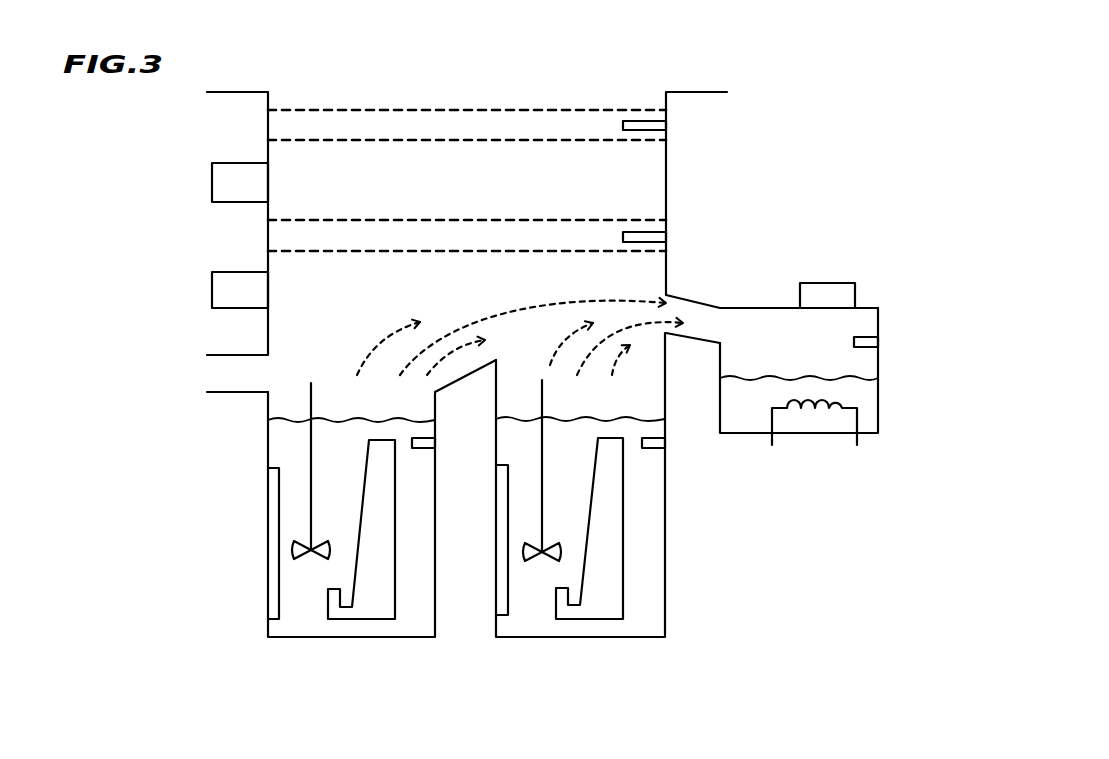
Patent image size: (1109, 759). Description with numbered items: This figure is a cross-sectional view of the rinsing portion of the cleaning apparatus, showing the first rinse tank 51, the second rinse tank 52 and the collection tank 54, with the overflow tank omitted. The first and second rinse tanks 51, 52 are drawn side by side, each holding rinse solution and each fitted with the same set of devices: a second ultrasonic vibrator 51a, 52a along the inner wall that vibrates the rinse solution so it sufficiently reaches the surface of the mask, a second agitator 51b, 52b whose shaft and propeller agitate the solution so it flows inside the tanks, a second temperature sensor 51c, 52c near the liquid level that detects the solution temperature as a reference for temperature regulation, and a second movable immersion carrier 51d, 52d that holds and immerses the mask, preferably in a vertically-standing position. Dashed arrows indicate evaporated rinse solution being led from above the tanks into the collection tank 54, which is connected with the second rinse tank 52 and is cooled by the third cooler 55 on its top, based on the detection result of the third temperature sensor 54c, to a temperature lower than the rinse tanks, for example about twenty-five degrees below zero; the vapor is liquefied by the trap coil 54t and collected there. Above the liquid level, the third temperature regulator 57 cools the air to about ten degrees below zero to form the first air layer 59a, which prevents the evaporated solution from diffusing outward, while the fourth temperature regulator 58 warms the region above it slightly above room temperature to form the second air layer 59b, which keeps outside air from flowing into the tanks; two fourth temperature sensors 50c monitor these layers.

The fourth temperature sensor 50c is at (668, 124).
The first rinse tank 51 is at (420, 628).
The second ultrasonic vibrator 51a is at (276, 553).
The second agitator 51b is at (311, 497).
The second temperature sensor 51c is at (447, 425).
The second movable immersion carrier 51d is at (367, 608).
The second rinse tank 52 is at (648, 628).
The second ultrasonic vibrator 52a is at (506, 555).
The second agitator 52b is at (542, 497).
The second temperature sensor 52c is at (667, 444).
The second movable immersion carrier 52d is at (594, 607).
The collection tank 54 is at (875, 414).
The third temperature sensor 54c is at (880, 343).
The trap coil 54t is at (845, 405).
The third cooler 55 is at (825, 292).
The third temperature regulator 57 is at (226, 292).
The fourth temperature regulator 58 is at (228, 184).
The first air layer 59a is at (523, 228).
The second air layer 59b is at (530, 122).